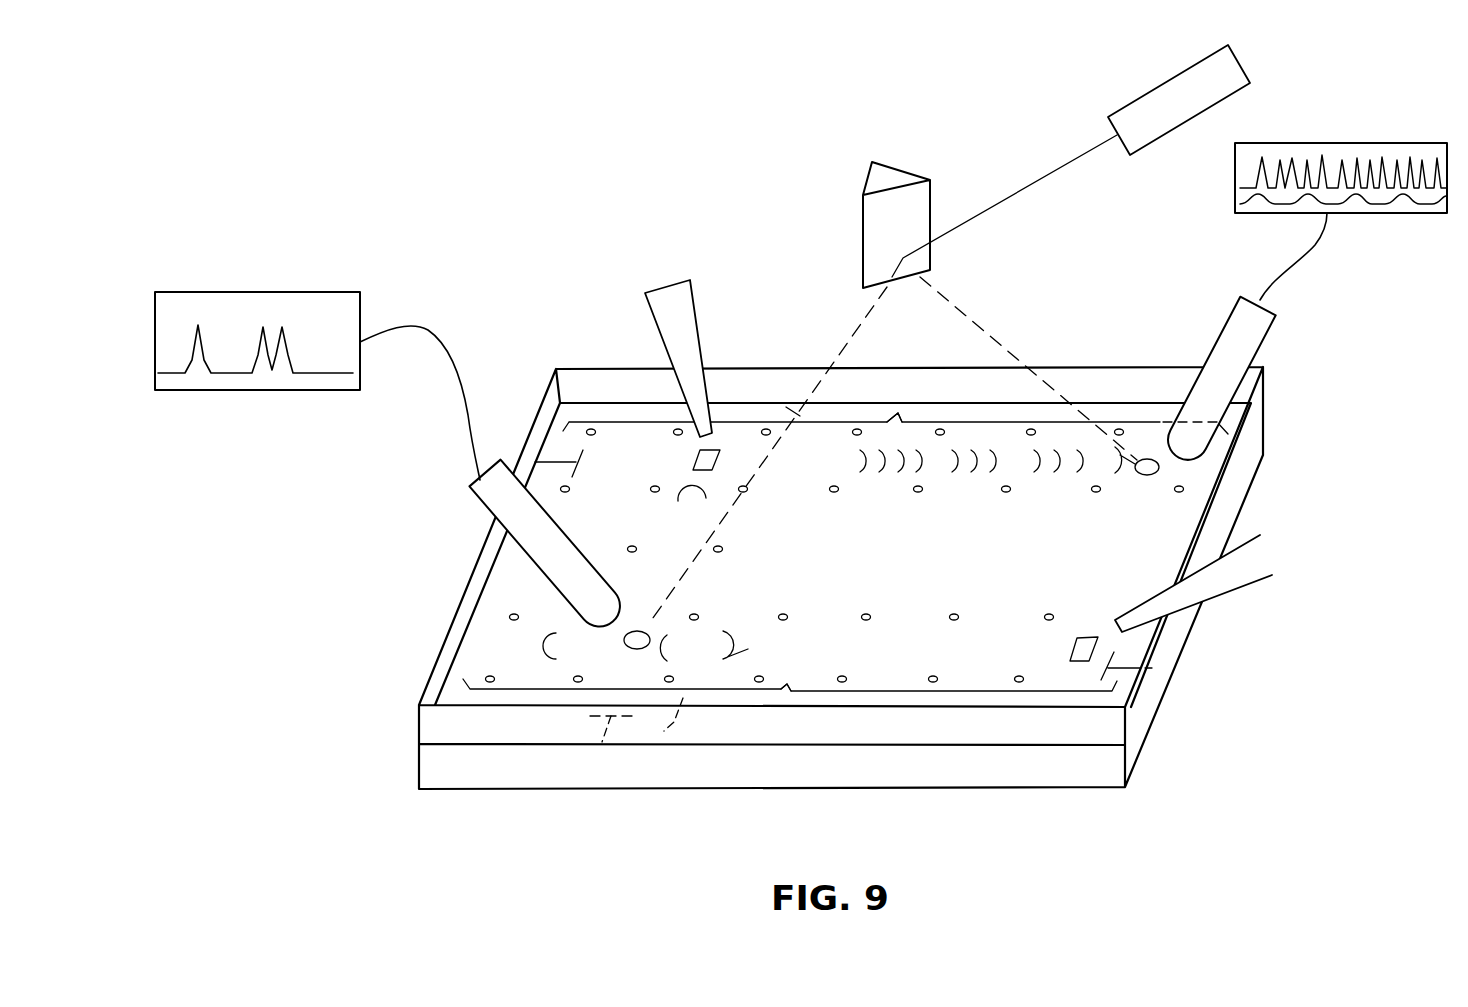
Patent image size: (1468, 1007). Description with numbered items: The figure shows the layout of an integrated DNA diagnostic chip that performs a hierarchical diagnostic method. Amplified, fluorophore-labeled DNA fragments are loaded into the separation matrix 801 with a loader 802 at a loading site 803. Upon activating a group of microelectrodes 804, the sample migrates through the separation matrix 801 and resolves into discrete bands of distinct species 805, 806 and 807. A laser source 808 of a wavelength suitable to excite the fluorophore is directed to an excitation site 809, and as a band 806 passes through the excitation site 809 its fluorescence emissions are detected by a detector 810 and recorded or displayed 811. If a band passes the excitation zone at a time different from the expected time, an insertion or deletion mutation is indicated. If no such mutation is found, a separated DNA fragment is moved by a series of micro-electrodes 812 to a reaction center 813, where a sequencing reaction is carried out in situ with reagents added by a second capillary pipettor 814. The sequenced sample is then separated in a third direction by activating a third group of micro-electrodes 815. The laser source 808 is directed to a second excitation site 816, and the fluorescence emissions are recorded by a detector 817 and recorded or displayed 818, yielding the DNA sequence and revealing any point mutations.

The separation matrix 801 is at (1227, 483).
The loader 802 is at (1238, 578).
The loading site 803 is at (1078, 658).
The group of microelectrodes 804 is at (787, 691).
The band of distinct species 805 is at (737, 570).
The band of distinct species 806 is at (683, 483).
The band of distinct species 807 is at (541, 645).
The laser source 808 is at (1140, 98).
The excitation site 809 is at (630, 645).
The detector 810 is at (483, 491).
The recording or display 811 is at (272, 290).
The series of micro-electrodes 812 is at (793, 417).
The reaction center 813 is at (707, 453).
The second capillary pipettor 814 is at (683, 307).
The third group of micro-electrodes 815 is at (898, 413).
The excitation site 816 is at (1147, 458).
The detector 817 is at (1235, 322).
The recording or display 818 is at (1330, 145).